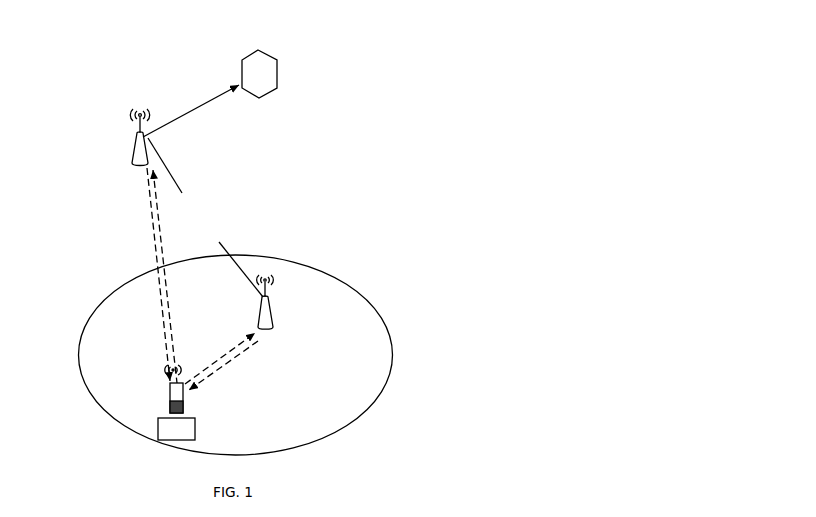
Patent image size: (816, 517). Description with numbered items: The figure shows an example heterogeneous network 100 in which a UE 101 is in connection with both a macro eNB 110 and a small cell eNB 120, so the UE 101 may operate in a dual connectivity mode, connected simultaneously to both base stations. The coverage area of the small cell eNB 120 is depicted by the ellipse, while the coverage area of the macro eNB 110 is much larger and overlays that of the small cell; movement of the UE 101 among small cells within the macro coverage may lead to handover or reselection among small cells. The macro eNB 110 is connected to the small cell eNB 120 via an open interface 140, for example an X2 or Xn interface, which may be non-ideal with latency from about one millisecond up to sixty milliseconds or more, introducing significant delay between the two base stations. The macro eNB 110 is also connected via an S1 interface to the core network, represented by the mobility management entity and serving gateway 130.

The heterogeneous network 100 is at (407, 53).
The UE 101 is at (202, 432).
The macro eNB 110 is at (122, 127).
The small cell eNB 120 is at (287, 303).
The mobility management entity (MME) and serving gateway (S-GW) 130 is at (245, 48).
The open interface 140 is at (232, 195).